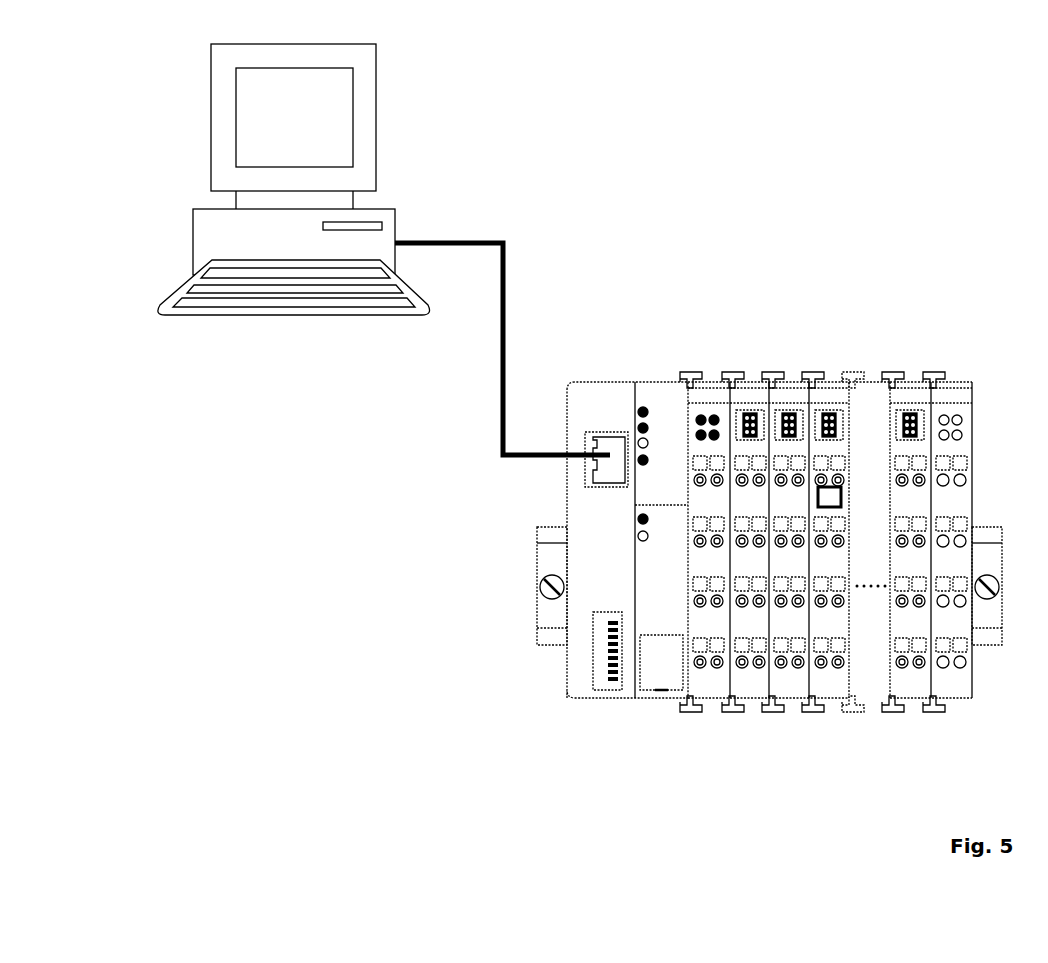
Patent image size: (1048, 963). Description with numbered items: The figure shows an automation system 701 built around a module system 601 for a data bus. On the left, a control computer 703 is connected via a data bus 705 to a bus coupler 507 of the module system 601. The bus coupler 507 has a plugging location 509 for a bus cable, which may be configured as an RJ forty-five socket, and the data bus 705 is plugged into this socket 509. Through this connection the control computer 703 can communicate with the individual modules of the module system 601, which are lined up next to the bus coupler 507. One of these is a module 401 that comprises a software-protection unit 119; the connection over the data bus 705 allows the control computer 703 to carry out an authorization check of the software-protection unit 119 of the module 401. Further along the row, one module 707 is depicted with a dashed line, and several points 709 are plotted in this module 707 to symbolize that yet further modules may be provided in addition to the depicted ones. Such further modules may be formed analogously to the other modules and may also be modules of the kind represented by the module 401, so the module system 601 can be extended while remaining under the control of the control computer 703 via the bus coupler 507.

The automation system 701 is at (770, 223).
The control computer 703 is at (387, 232).
The data bus 705 is at (505, 257).
The bus coupler 507 is at (720, 375).
The plugging location 509 is at (603, 475).
The module system 601 is at (625, 724).
The module 401 is at (830, 390).
The software-protection unit 119 is at (830, 500).
The points 709 is at (870, 590).
The module depicted with a dashed line 707 is at (875, 698).